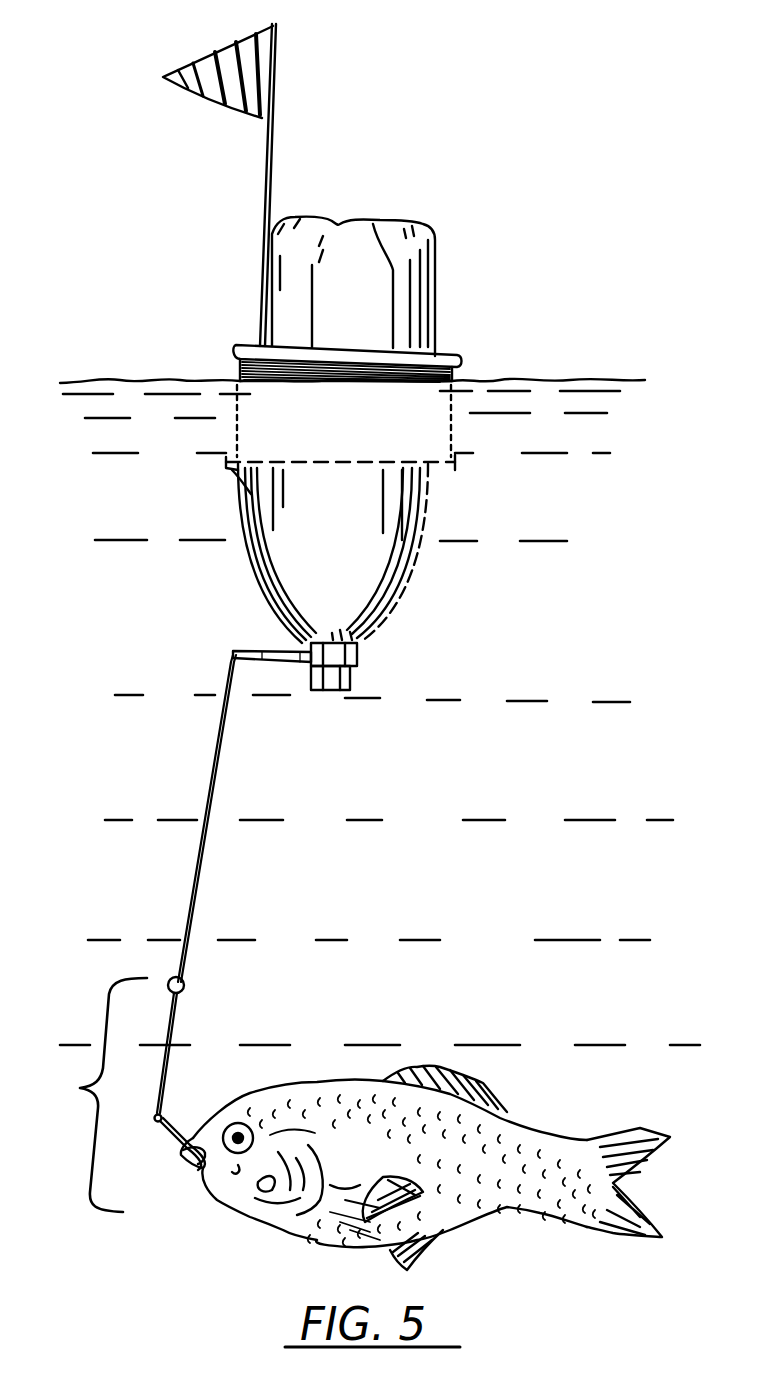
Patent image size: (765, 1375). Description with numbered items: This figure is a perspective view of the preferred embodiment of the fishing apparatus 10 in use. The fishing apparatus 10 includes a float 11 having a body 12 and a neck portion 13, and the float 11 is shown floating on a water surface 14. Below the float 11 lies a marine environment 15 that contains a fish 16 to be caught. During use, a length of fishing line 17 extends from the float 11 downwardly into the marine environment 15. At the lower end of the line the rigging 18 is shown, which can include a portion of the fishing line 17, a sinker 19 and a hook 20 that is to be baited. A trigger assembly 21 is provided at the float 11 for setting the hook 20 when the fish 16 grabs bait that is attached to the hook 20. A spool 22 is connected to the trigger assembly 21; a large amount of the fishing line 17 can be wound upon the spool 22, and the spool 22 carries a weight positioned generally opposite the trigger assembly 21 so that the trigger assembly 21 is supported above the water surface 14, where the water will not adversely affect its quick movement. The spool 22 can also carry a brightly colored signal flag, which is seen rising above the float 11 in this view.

The fishing apparatus 10 is at (578, 201).
The float 11 is at (437, 283).
The body 12 is at (356, 517).
The neck portion 13 is at (360, 642).
The water surface 14 is at (609, 373).
The marine environment 15 is at (600, 806).
The fish 16 is at (513, 1118).
The fishing line 17 is at (216, 745).
The rigging 18 is at (92, 1095).
The sinker 19 is at (188, 982).
The hook 20 is at (162, 1155).
The trigger assembly 21 is at (211, 619).
The spool 22 is at (235, 346).